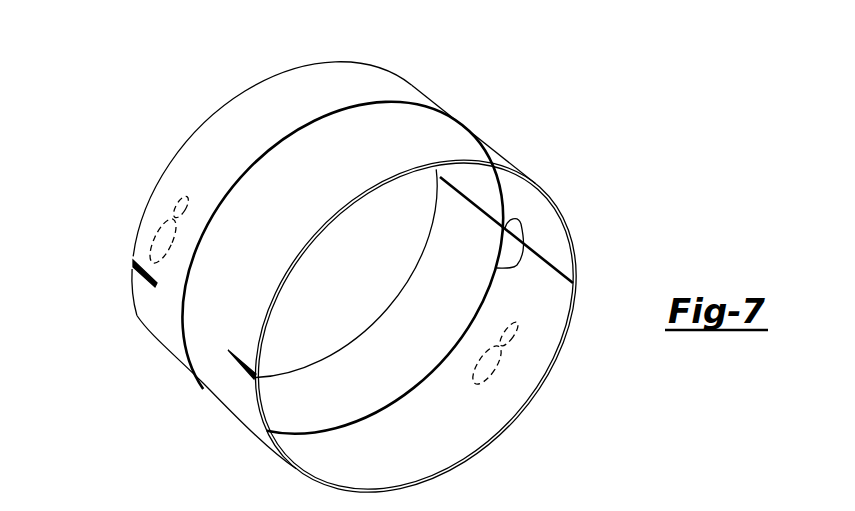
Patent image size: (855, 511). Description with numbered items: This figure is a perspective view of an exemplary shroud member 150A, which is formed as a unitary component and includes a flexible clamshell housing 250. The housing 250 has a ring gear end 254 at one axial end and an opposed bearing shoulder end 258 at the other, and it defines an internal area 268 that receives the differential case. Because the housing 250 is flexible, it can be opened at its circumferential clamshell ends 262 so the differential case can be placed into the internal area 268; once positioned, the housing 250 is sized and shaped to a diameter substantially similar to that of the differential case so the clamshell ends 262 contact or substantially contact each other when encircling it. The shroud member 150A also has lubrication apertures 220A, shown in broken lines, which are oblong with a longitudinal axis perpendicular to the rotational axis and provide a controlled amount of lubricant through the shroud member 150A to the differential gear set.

The shroud member 150A is at (348, 262).
The flexible clamshell housing 250 is at (348, 262).
The ring gear end 254 is at (178, 147).
The bearing shoulder end 258 is at (503, 430).
The clamshell ends 262 is at (507, 228).
The internal area 268 is at (345, 295).
The lubrication apertures 220A is at (150, 222).